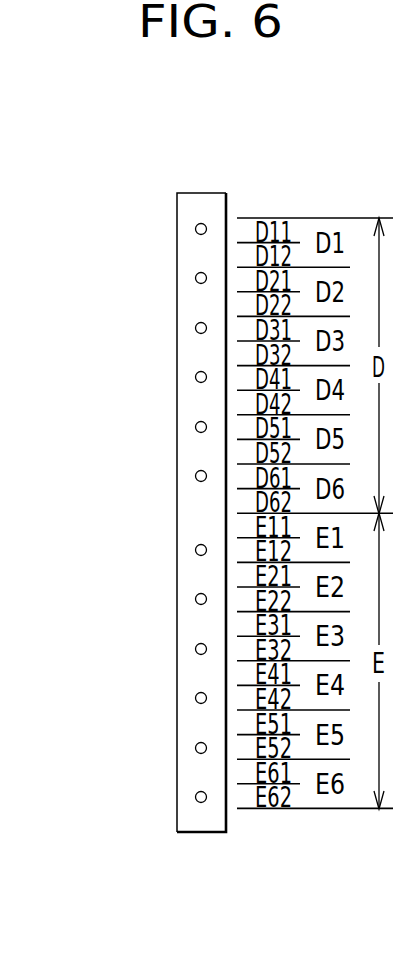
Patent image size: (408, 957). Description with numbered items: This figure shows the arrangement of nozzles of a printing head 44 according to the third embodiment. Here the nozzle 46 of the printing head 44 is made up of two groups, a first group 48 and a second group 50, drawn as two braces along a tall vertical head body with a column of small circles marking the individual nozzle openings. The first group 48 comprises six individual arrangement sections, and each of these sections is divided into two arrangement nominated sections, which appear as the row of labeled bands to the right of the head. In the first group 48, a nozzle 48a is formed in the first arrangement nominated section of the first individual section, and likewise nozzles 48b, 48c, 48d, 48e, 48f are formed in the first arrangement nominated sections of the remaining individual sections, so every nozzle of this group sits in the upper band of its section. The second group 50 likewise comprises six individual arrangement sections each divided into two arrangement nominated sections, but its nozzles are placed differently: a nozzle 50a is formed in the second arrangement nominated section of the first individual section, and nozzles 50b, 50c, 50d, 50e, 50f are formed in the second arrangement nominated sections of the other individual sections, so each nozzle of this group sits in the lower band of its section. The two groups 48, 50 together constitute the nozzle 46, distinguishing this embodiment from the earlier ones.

The printing head 44 is at (207, 189).
The nozzle 46 is at (56, 325).
The first group 48 is at (108, 483).
The nozzle 48a is at (195, 229).
The nozzle 48b is at (195, 278).
The nozzle 48c is at (195, 328).
The nozzle 48d is at (195, 377).
The nozzle 48e is at (195, 427).
The nozzle 48f is at (195, 476).
The second group 50 is at (108, 801).
The nozzle 50a is at (195, 550).
The nozzle 50b is at (195, 599).
The nozzle 50c is at (195, 649).
The nozzle 50d is at (195, 698).
The nozzle 50e is at (195, 748).
The nozzle 50f is at (195, 797).